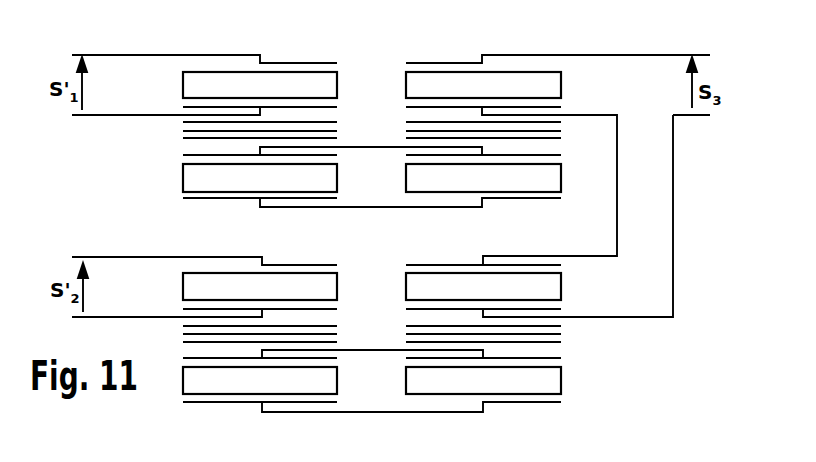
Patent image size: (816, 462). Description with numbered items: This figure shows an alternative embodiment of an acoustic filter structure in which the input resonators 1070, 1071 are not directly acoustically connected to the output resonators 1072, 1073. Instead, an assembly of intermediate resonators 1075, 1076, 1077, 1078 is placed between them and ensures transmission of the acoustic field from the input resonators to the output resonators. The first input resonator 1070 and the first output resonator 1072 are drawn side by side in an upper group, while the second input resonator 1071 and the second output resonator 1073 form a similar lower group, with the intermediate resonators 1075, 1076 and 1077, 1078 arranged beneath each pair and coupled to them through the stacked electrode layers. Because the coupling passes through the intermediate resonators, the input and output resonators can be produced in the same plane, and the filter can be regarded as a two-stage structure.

The input resonator 1070 is at (300, 82).
The input resonator 1071 is at (220, 289).
The output resonator 1072 is at (442, 87).
The output resonator 1073 is at (420, 284).
The intermediate resonator 1075 is at (193, 180).
The intermediate resonator 1076 is at (450, 182).
The intermediate resonator 1077 is at (225, 383).
The intermediate resonator 1078 is at (530, 380).